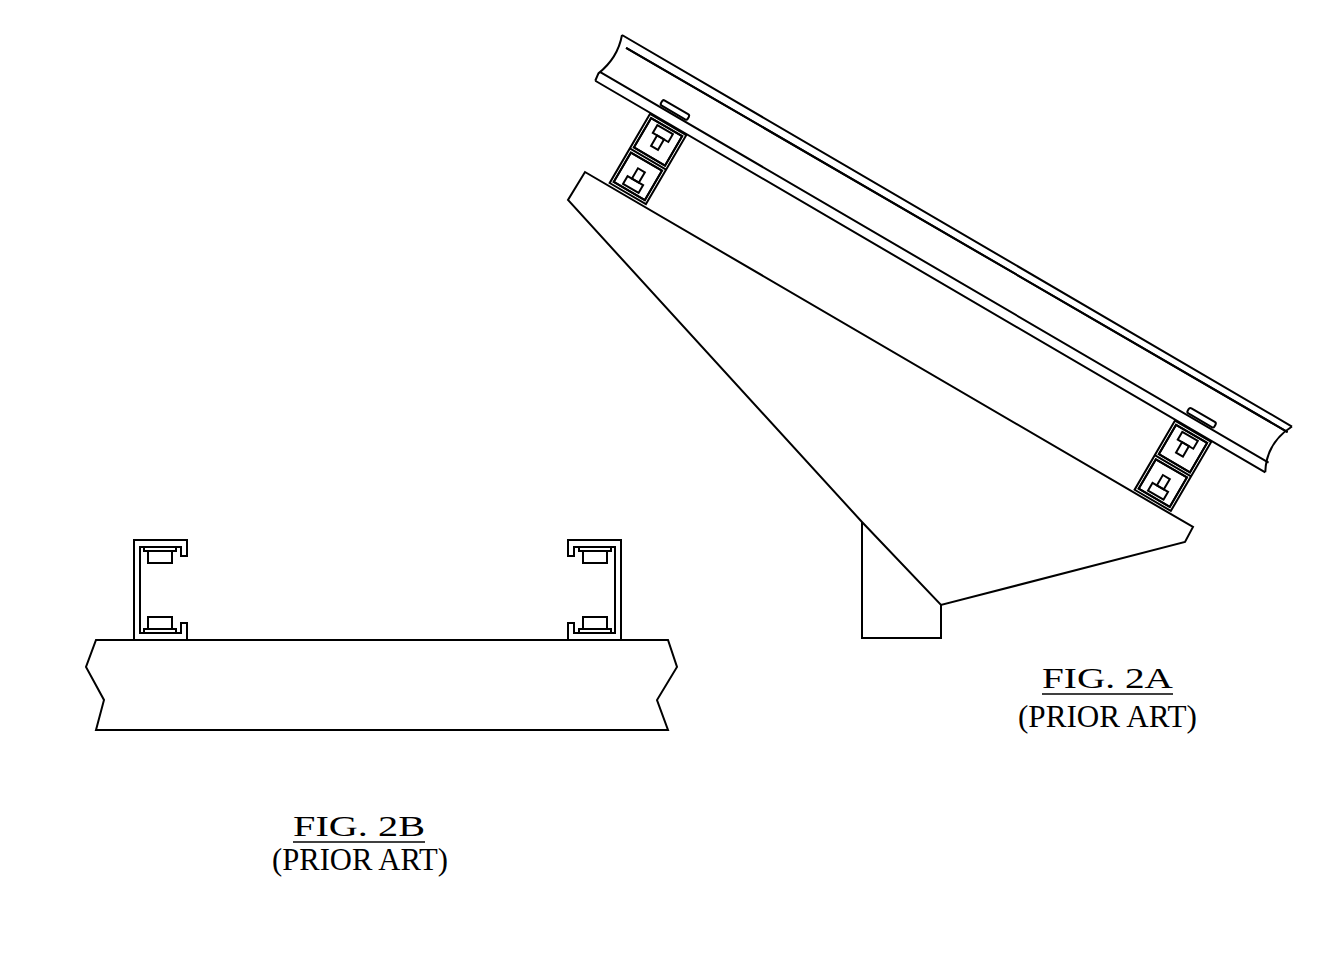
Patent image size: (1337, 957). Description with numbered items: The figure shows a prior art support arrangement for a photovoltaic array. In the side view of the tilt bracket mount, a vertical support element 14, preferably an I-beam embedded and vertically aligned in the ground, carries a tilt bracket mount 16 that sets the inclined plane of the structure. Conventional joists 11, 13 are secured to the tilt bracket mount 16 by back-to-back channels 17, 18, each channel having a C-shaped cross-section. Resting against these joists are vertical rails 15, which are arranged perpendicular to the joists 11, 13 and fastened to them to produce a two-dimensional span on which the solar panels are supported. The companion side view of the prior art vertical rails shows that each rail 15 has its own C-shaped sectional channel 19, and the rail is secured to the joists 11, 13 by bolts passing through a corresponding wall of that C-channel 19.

In FIG. 2A, the joist 11 is at (621, 146).
In FIG. 2B, the joist 11 is at (350, 640).
In FIG. 2A, the joist 13 is at (1139, 463).
In FIG. 2B, the joist 13 is at (377, 590).
In FIG. 2A, the vertical support element 14 is at (862, 613).
In FIG. 2A, the vertical rail 15 is at (965, 228).
In FIG. 2A, the tilt bracket mount 16 is at (860, 382).
In FIG. 2A, the channel 17 is at (677, 153).
In FIG. 2A, the channel 18 is at (657, 193).
In FIG. 2A, the C-channel 19 is at (1033, 312).
In FIG. 2B, the C-channel 19 is at (140, 592).